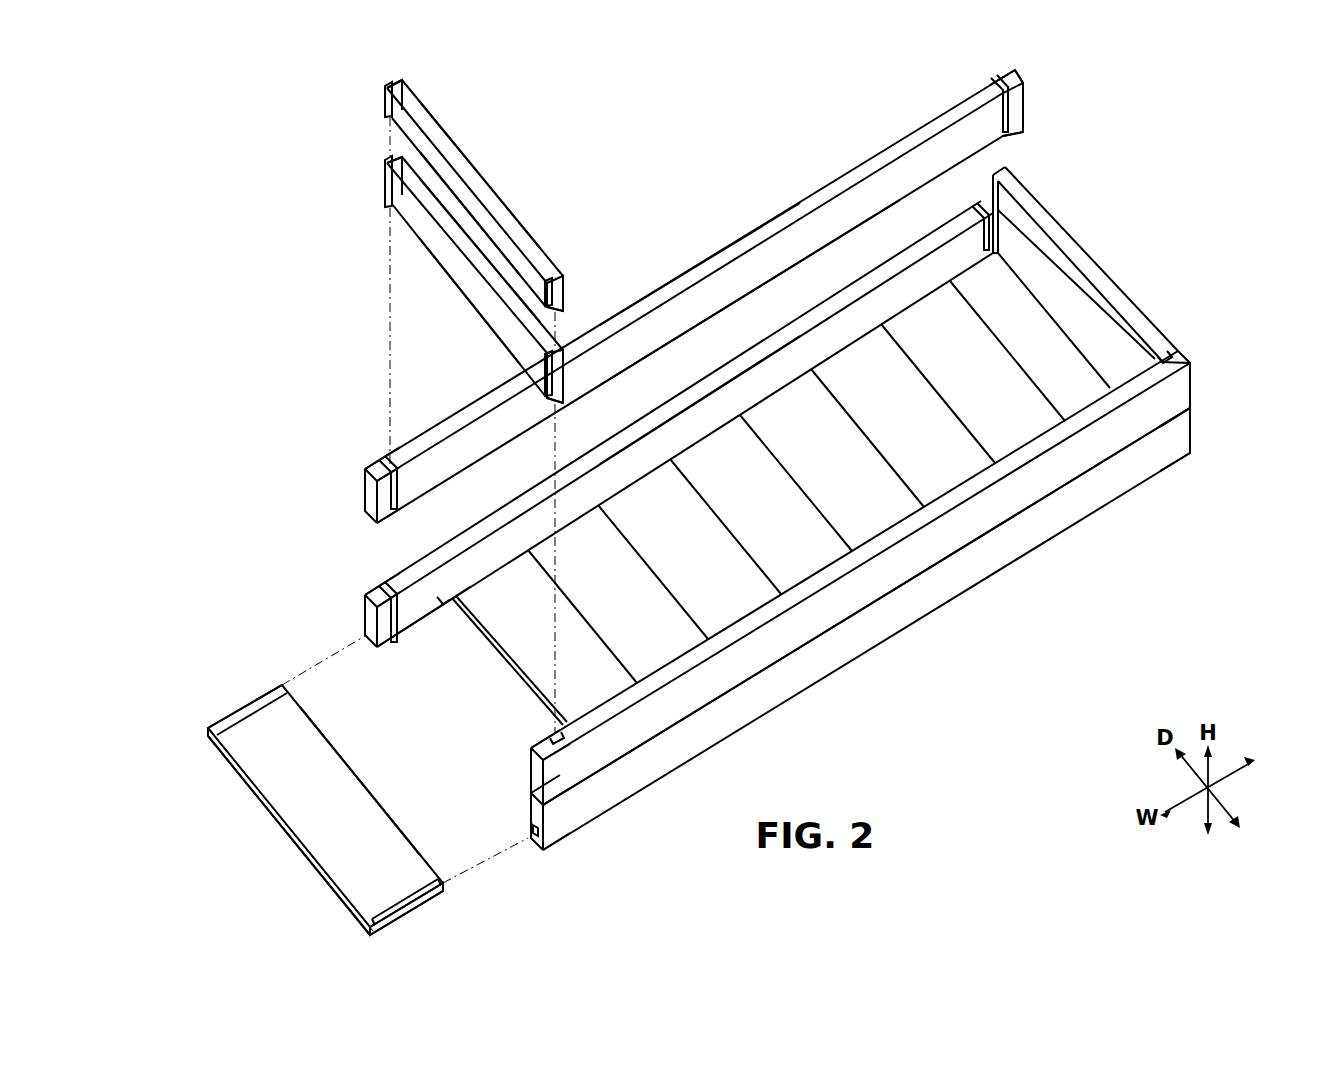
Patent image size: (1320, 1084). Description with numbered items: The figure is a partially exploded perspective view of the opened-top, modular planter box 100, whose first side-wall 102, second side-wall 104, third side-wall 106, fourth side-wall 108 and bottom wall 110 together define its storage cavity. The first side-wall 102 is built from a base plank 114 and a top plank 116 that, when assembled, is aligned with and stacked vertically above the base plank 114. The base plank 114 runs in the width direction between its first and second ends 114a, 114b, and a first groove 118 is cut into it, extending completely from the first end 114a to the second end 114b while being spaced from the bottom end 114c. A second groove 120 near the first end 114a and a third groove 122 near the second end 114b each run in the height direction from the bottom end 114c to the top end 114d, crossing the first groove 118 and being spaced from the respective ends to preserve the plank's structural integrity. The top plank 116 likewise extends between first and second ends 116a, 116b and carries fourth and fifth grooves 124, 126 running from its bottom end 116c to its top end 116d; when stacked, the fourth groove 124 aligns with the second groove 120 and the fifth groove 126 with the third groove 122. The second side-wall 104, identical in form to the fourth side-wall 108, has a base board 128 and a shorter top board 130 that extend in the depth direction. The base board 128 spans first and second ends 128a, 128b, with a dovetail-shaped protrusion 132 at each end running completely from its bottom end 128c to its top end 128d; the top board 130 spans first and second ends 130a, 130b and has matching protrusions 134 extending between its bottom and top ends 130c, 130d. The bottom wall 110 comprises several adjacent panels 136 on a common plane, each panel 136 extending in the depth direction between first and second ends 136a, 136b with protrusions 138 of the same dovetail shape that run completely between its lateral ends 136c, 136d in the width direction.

The planter box 100 is at (1245, 112).
The first side-wall 102 is at (268, 458).
The second side-wall 104 is at (258, 43).
The third side-wall 106 is at (995, 603).
The fourth side-wall 108 is at (1126, 262).
The bottom wall 110 is at (758, 503).
The base plank 114 is at (677, 437).
The first end of base plank 114a is at (368, 605).
The second end of base plank 114b is at (1196, 426).
The bottom end of base plank 114c is at (426, 626).
The top end of base plank 114d is at (738, 372).
The top plank 116 is at (792, 268).
The first end of top plank 116a is at (370, 495).
The second end of top plank 116b is at (1028, 108).
The bottom end of top plank 116c is at (832, 242).
The top end of top plank 116d is at (825, 192).
The first groove 118 is at (445, 607).
The second groove 120 is at (380, 617).
The third groove 122 is at (978, 214).
The fourth groove 124 is at (408, 487).
The fifth groove 126 is at (1020, 111).
The base board 128 is at (455, 262).
The first end of base board 128a is at (373, 162).
The second end of base board 128b is at (578, 383).
The bottom end of base board 128c is at (475, 312).
The top end of base board 128d is at (418, 202).
The top board 130 is at (466, 196).
The first end of top board 130a is at (373, 96).
The second end of top board 130b is at (578, 278).
The bottom end of top board 130c is at (486, 230).
The top end of top board 130d is at (444, 141).
The protrusion of base board 132 is at (382, 190).
The protrusion of top board 134 is at (396, 83).
The panel 136 is at (335, 800).
The first end of panel 136a is at (199, 712).
The second end of panel 136b is at (396, 936).
The first lateral end of panel 136c is at (278, 815).
The second lateral end of panel 136d is at (327, 738).
The protrusion of panel 138 is at (246, 715).